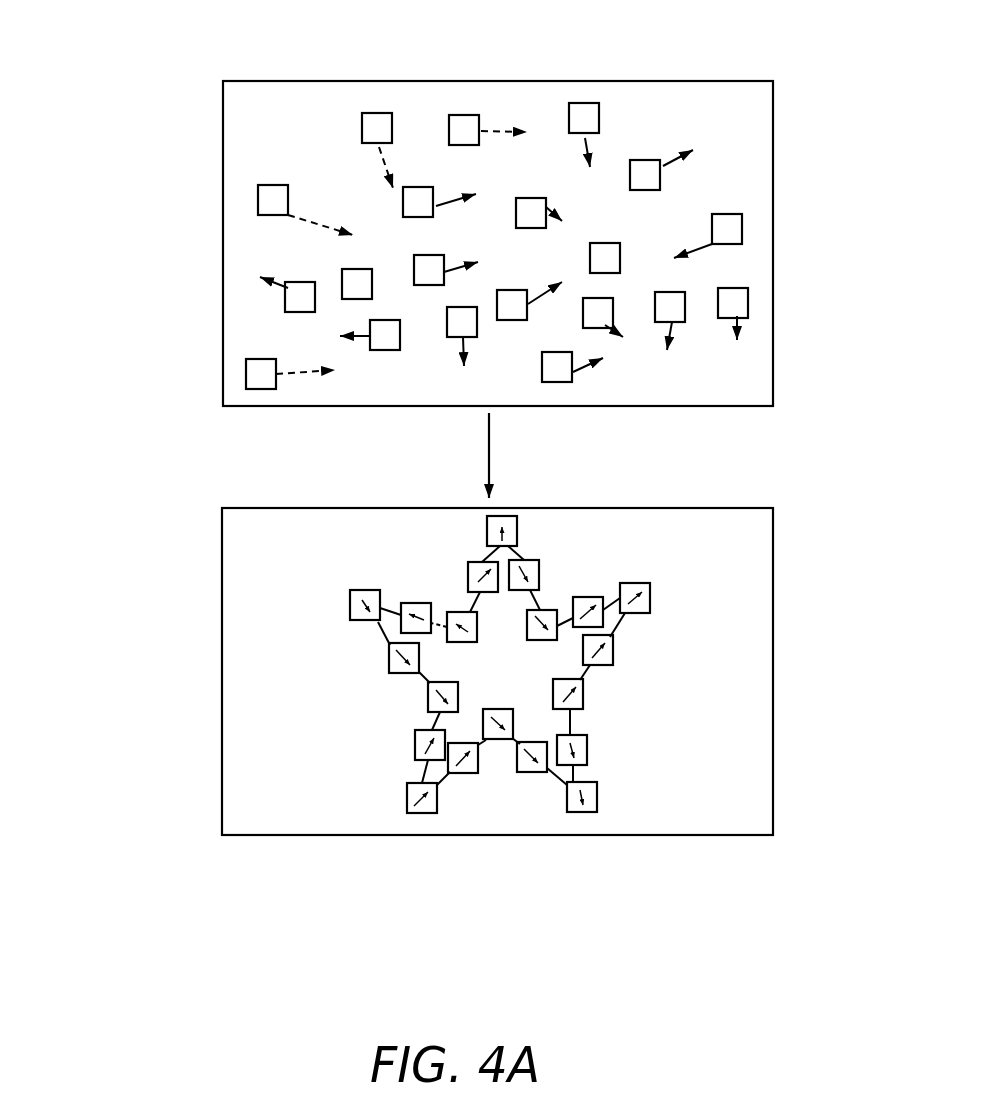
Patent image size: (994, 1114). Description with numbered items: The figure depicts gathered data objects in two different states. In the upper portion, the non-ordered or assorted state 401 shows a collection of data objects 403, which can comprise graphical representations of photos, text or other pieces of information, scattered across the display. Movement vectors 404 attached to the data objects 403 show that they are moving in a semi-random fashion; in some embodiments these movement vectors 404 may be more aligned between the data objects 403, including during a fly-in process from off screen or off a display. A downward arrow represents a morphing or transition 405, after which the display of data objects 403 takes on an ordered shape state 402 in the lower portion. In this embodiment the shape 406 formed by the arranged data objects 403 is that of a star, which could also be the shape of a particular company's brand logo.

The non-ordered or assorted state 401 is at (774, 107).
The ordered shape state 402 is at (226, 790).
The data objects 403 is at (362, 123).
The movement vectors 404 is at (340, 336).
The morphing or transition 405 is at (485, 460).
The shape 406 is at (428, 686).